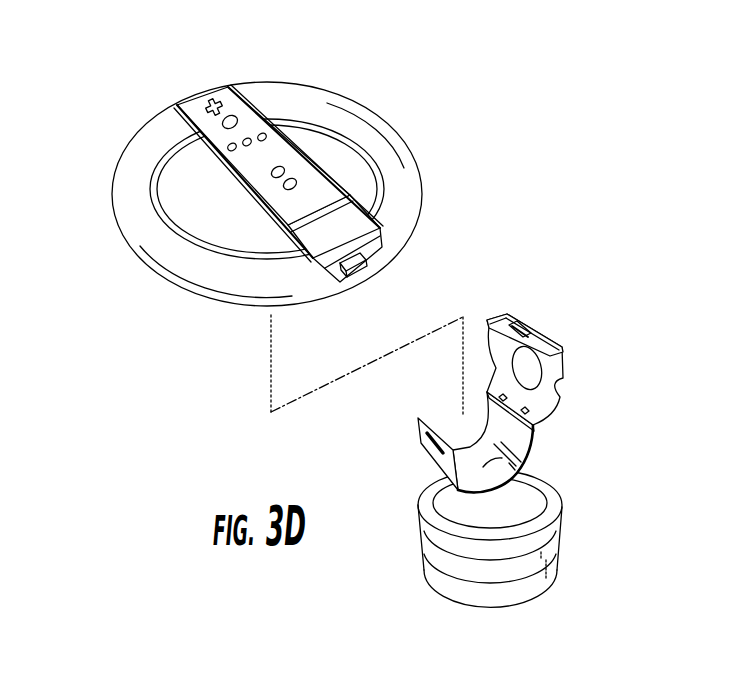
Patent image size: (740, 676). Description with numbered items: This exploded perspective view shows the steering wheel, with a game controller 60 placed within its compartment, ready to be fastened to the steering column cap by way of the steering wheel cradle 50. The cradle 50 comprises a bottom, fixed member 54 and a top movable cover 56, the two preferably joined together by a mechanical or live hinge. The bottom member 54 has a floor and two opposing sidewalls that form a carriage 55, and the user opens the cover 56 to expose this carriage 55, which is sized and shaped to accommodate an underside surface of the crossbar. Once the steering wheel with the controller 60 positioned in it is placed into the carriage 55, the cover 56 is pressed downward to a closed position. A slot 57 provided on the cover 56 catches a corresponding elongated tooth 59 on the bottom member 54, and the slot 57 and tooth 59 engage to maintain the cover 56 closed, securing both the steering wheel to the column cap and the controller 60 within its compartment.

The steering wheel cradle 50 is at (485, 425).
The bottom member 54 is at (420, 440).
The carriage 55 is at (507, 453).
The top cover 56 is at (507, 320).
The slot 57 is at (530, 330).
The elongated tooth 59 is at (433, 447).
The game controller 60 is at (190, 102).